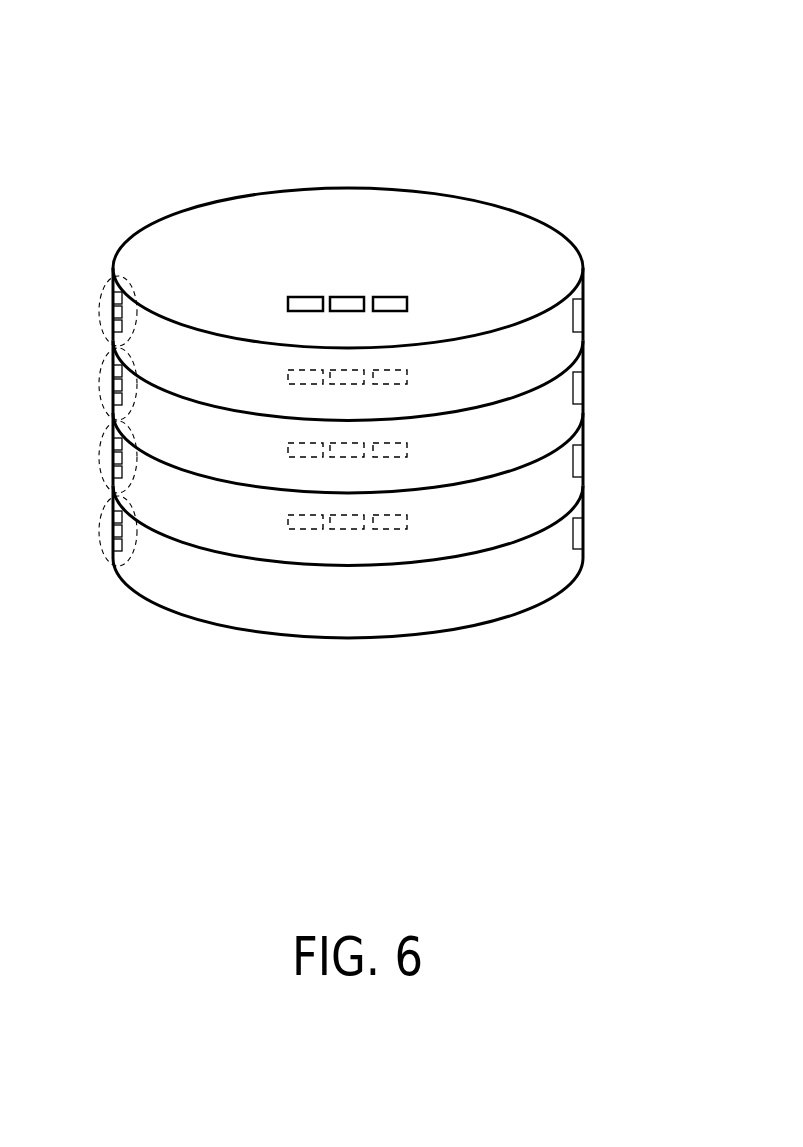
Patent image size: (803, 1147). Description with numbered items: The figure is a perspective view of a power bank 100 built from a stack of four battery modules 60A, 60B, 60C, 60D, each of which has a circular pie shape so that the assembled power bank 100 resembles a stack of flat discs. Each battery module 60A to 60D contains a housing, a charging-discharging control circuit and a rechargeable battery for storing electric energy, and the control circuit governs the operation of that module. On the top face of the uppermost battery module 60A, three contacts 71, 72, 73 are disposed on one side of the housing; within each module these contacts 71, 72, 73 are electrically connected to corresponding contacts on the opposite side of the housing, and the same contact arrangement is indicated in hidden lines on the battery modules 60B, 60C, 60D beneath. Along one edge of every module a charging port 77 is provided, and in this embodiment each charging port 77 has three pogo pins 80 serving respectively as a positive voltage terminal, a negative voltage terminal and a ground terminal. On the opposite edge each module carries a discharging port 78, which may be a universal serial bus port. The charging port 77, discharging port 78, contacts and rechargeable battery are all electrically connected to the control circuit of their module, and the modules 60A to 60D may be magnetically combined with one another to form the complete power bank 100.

The power bank 100 is at (592, 72).
The battery module 60A is at (562, 322).
The battery module 60B is at (562, 395).
The battery module 60C is at (562, 468).
The battery module 60D is at (562, 541).
The contact 71 is at (303, 299).
The contact 72 is at (348, 299).
The contact 73 is at (392, 299).
The charging port 77 is at (112, 324).
The discharging port 78 is at (584, 312).
The pogo pins 80 is at (112, 293).